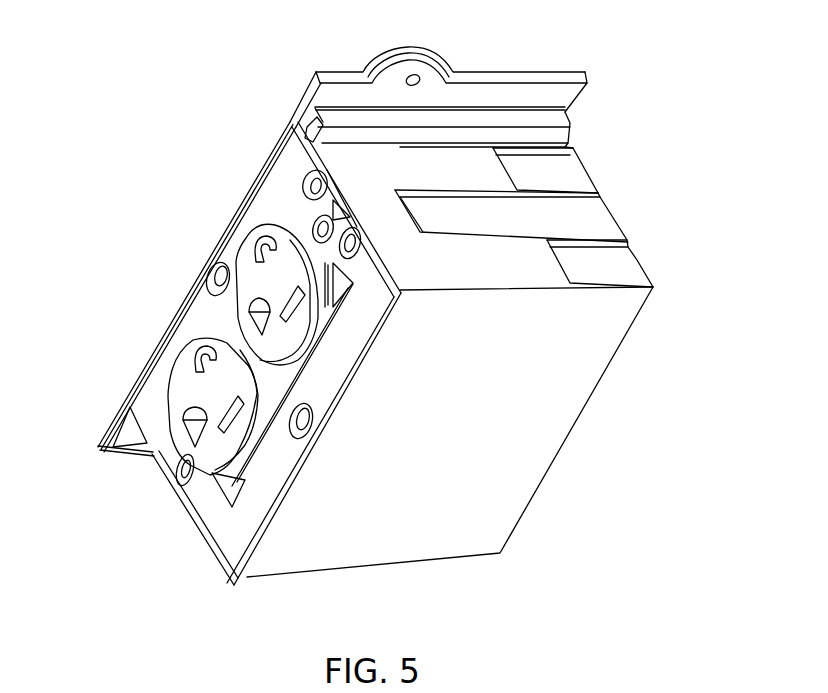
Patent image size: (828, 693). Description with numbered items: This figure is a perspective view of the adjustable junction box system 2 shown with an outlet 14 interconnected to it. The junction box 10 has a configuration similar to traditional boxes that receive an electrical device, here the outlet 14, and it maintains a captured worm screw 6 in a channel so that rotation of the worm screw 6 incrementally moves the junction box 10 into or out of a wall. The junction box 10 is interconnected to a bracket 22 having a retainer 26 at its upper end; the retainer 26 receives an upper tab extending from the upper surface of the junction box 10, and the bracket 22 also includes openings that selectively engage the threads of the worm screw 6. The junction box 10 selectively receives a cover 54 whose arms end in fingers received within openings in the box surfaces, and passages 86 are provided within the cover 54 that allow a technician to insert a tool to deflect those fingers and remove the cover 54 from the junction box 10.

The adjustable junction box system 2 is at (132, 133).
The captured worm screw 6 is at (211, 270).
The junction box 10 is at (437, 493).
The outlet 14 is at (212, 453).
The bracket 22 is at (513, 93).
The retainer 26 is at (552, 132).
The cover 54 is at (227, 527).
The passages 86 is at (490, 217).